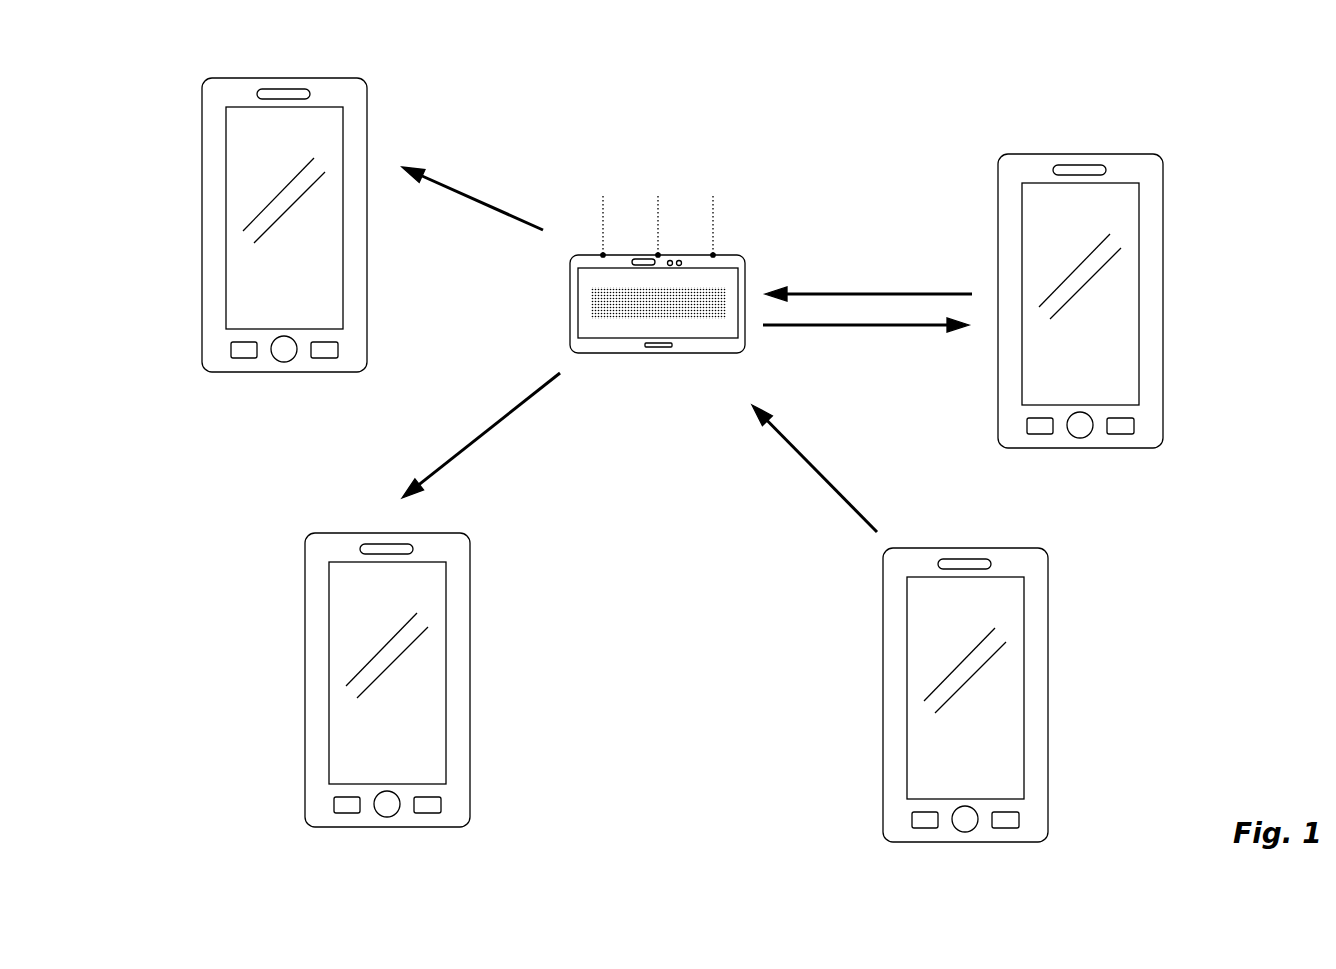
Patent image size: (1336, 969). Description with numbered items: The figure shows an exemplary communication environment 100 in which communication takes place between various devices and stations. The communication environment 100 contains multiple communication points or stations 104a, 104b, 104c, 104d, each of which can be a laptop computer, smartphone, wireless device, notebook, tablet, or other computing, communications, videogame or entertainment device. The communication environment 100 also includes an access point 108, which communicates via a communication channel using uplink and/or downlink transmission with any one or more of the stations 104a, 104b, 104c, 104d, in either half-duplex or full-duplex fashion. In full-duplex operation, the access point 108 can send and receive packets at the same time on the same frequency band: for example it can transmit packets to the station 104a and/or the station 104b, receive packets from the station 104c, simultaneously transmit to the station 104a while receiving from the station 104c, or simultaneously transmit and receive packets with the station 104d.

The communication environment 100 is at (1184, 80).
The station 104a is at (202, 222).
The station 104b is at (305, 676).
The station 104c is at (883, 690).
The station 104d is at (1163, 302).
The access point 108 is at (578, 328).